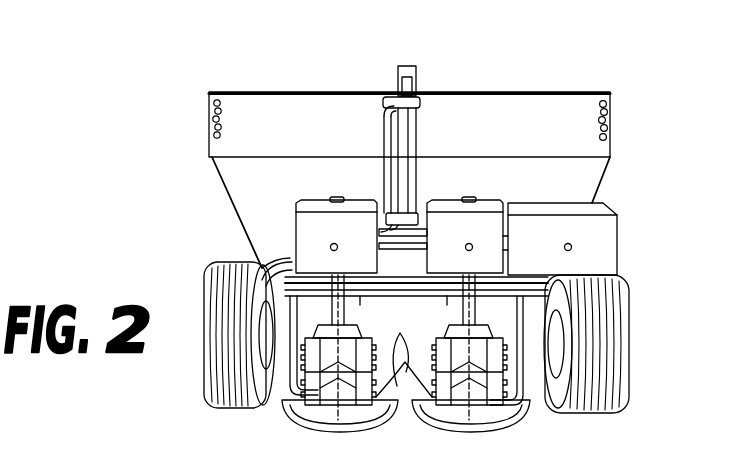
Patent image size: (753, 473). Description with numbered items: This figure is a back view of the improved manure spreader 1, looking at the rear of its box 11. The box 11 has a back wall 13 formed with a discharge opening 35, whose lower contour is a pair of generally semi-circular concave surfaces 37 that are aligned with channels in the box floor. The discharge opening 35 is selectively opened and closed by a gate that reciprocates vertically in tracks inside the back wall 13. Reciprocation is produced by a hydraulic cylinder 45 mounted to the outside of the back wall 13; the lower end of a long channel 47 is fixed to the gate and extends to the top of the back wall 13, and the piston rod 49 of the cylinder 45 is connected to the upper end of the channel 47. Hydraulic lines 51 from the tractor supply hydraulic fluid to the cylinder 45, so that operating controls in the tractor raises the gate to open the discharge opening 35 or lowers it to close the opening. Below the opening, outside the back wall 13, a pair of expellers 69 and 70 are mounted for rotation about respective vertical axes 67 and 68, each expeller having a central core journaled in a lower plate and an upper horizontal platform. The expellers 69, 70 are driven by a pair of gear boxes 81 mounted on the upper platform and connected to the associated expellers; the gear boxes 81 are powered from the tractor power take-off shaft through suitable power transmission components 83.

The manure spreader 1 is at (550, 70).
The box 11 is at (616, 128).
The back wall 13 is at (583, 181).
The discharge opening 35 is at (516, 312).
The concave surfaces 37 is at (405, 358).
The hydraulic cylinder 45 is at (406, 131).
The channel 47 is at (403, 66).
The piston rod 49 is at (385, 95).
The hydraulic lines 51 is at (278, 268).
The vertical axis 67 is at (335, 378).
The vertical axis 68 is at (478, 380).
The expeller 69 is at (360, 432).
The expeller 70 is at (486, 434).
The gear boxes 81 is at (320, 251).
The power transmission components 83 is at (606, 241).